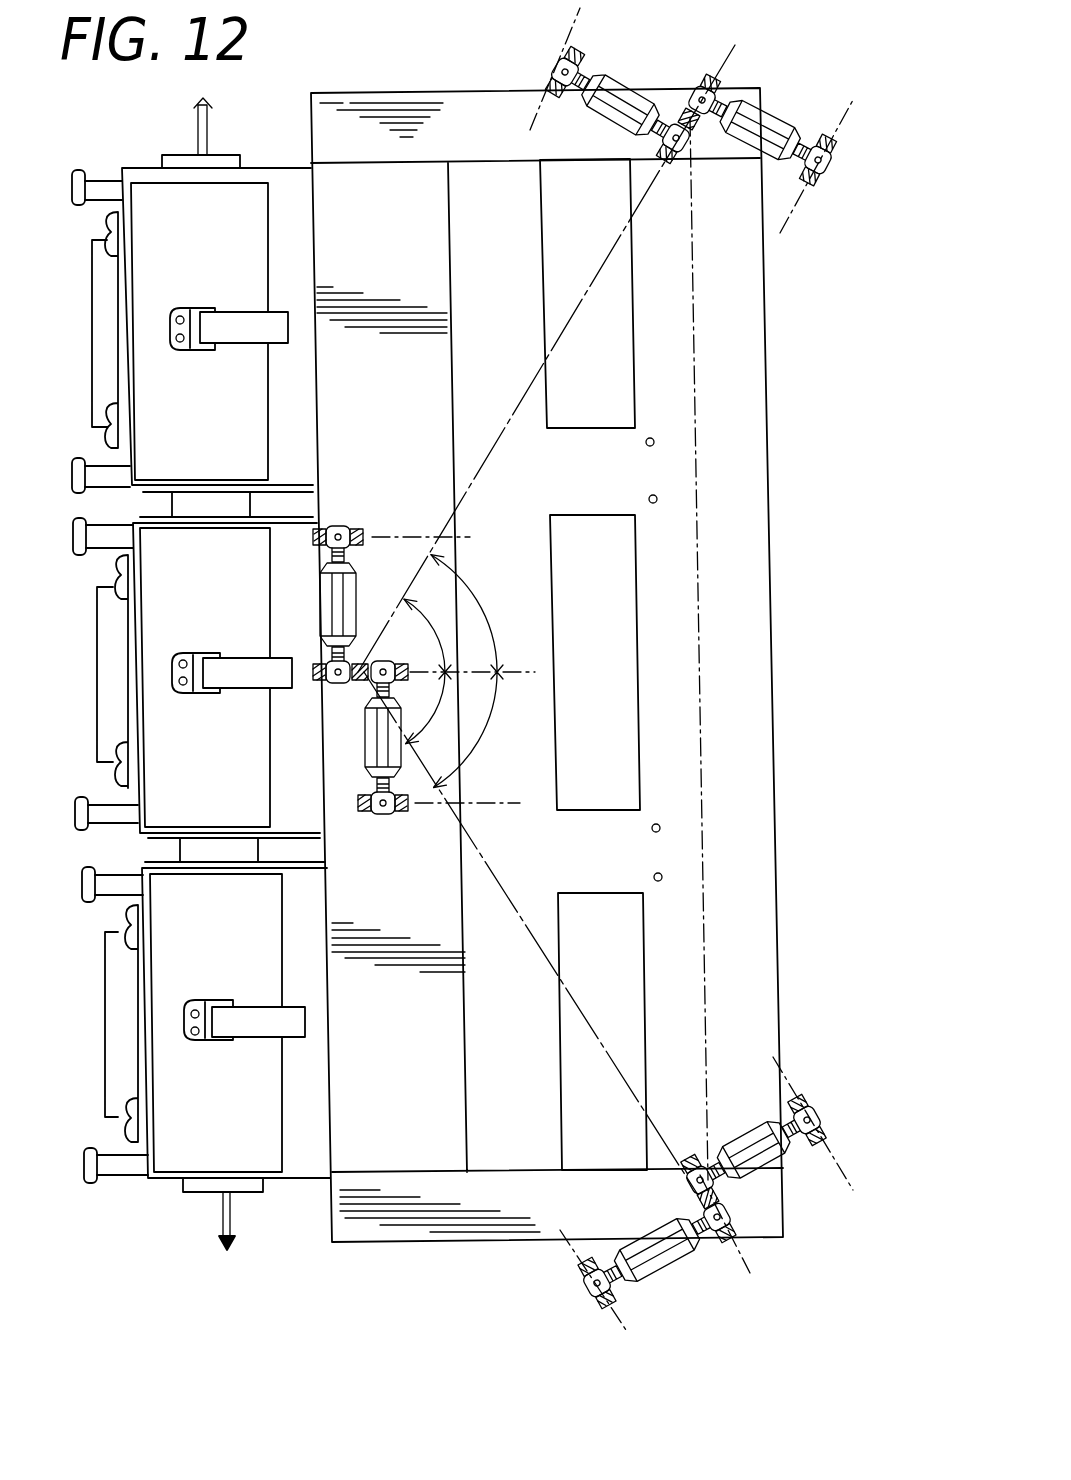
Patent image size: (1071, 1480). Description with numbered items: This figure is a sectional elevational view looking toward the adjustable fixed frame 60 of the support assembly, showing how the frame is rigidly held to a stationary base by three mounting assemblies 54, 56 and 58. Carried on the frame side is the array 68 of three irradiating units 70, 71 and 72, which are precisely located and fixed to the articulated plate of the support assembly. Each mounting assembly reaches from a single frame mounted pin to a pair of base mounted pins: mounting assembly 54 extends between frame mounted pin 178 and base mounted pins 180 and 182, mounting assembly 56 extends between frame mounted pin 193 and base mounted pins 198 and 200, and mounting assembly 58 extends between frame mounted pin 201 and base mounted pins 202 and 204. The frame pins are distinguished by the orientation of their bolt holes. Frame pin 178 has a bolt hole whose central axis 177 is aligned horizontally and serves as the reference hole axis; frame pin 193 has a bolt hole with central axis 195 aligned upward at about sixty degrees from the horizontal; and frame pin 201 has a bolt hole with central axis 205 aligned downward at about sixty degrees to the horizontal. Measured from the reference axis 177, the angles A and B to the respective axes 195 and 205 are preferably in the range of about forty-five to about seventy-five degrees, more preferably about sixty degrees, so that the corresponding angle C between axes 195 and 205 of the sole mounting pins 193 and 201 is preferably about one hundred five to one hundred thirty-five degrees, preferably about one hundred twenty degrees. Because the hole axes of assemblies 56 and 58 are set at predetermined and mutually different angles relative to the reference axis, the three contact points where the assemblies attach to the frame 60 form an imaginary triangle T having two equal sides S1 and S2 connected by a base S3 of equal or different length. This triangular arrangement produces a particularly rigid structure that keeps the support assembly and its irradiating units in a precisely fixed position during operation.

The adjustable fixed frame 60 is at (414, 92).
The array of irradiating units 68 is at (176, 674).
The irradiating unit 70 is at (217, 291).
The irradiating unit 71 is at (226, 678).
The irradiating unit 72 is at (236, 1059).
The mounting assembly 54 is at (317, 659).
The mounting assembly 56 is at (671, 1176).
The mounting assembly 58 is at (671, 140).
The central axis 177 is at (500, 670).
The frame mounted pin 178 is at (350, 685).
The base mounted pin 180 is at (355, 527).
The base mounted pin 182 is at (361, 815).
The frame mounted pin 193 is at (697, 1212).
The central axis 195 is at (531, 933).
The base mounted pin 198 is at (835, 1140).
The base mounted pin 200 is at (578, 1283).
The frame mounted pin 201 is at (692, 125).
The base mounted pin 202 is at (562, 58).
The base mounted pin 204 is at (813, 192).
The central axis 205 is at (546, 358).
The side of triangle S1 is at (487, 458).
The side of triangle S2 is at (492, 866).
The base of triangle S3 is at (765, 649).
The imaginary triangle T is at (703, 607).
The angle A is at (447, 723).
The angle B is at (438, 625).
The angle C is at (513, 725).